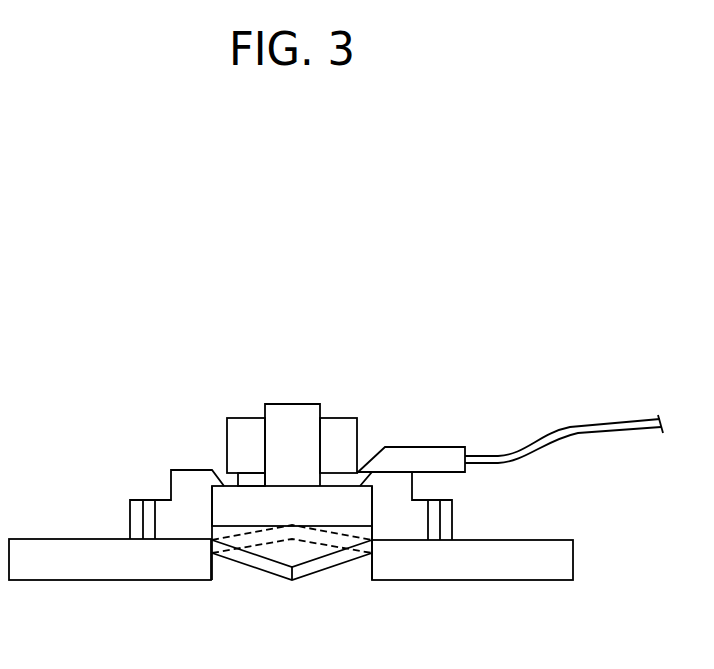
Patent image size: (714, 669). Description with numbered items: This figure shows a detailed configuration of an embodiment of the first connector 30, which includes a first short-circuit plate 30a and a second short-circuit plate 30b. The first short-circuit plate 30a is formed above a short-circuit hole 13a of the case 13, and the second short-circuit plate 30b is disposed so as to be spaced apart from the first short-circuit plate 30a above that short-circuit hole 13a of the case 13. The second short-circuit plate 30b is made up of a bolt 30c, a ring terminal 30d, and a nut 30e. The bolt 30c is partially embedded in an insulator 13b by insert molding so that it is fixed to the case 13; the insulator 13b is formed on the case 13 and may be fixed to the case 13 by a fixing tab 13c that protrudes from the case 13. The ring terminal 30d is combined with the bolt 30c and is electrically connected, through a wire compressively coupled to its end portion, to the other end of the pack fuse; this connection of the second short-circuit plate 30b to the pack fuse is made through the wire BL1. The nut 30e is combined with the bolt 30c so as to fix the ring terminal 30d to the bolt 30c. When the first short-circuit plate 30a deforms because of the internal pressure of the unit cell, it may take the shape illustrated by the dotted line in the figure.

The case 13 is at (553, 561).
The short-circuit hole 13a is at (368, 570).
The insulator 13b is at (408, 525).
The fixing tab 13c is at (158, 520).
The first connector 30 is at (292, 391).
The first short-circuit plate 30a is at (258, 583).
The second short-circuit plate 30b is at (205, 455).
The bolt 30c is at (226, 501).
The ring terminal 30d is at (253, 478).
The nut 30e is at (237, 430).
The wire BL1 is at (568, 427).